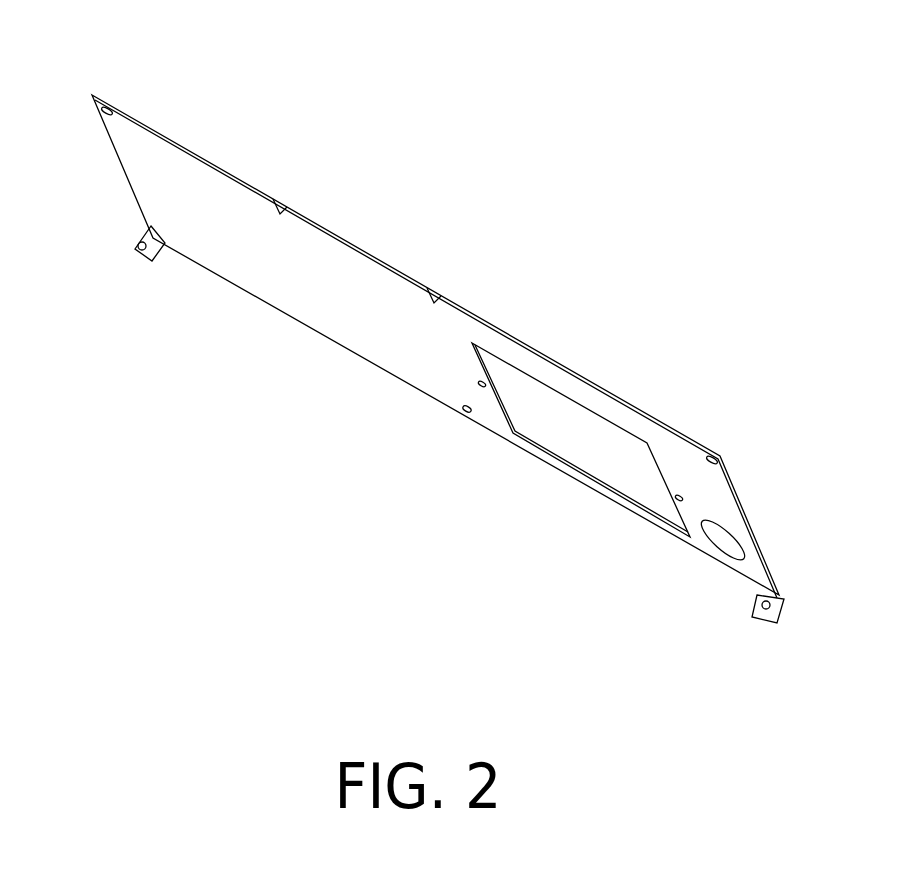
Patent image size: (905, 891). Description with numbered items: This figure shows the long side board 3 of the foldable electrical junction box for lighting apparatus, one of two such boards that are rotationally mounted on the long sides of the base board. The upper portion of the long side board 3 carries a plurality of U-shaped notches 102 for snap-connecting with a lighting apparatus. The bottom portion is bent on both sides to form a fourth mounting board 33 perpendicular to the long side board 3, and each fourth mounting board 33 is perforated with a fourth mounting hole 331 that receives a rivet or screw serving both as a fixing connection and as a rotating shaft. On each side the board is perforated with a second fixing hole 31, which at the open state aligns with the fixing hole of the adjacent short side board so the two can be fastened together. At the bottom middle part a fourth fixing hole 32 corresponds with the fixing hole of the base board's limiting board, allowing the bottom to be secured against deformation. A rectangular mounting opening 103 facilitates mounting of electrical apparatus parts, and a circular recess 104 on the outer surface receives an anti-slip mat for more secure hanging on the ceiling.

The long side board 3 is at (327, 300).
The second fixing hole 31 is at (113, 106).
The fourth fixing hole 32 is at (463, 413).
The fourth mounting board 33 is at (153, 258).
The fourth mounting hole 331 is at (136, 243).
The U-shaped notch 102 is at (281, 203).
The rectangular mounting opening 103 is at (557, 415).
The circular recess 104 is at (720, 540).